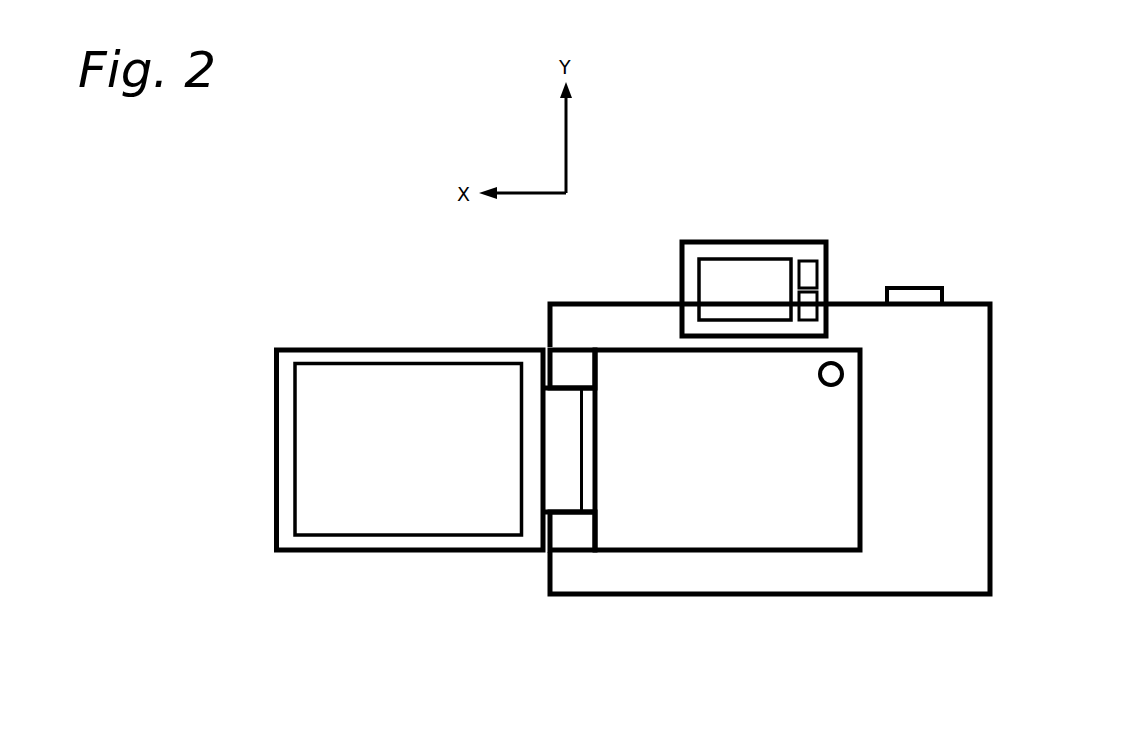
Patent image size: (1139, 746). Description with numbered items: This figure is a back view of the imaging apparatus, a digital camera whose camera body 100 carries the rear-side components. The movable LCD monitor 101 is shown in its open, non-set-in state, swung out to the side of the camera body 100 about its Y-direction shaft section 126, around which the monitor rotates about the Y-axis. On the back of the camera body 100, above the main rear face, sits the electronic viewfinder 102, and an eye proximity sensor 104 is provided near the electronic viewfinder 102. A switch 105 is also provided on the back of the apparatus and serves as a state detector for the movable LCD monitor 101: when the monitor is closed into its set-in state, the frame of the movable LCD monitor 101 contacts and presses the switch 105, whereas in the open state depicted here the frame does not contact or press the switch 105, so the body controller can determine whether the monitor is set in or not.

The camera body 100 is at (920, 586).
The movable LCD monitor 101 is at (344, 520).
The electronic viewfinder 102 is at (748, 263).
The eye proximity sensor 104 is at (814, 290).
The switch 105 is at (833, 374).
The Y-direction shaft section 126 is at (565, 417).